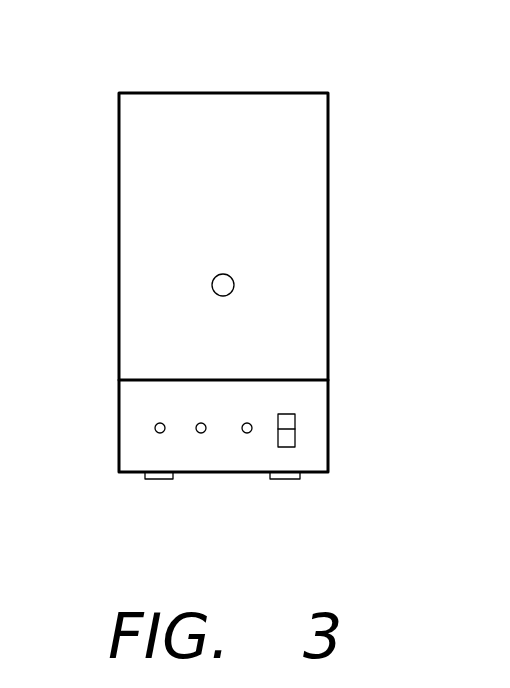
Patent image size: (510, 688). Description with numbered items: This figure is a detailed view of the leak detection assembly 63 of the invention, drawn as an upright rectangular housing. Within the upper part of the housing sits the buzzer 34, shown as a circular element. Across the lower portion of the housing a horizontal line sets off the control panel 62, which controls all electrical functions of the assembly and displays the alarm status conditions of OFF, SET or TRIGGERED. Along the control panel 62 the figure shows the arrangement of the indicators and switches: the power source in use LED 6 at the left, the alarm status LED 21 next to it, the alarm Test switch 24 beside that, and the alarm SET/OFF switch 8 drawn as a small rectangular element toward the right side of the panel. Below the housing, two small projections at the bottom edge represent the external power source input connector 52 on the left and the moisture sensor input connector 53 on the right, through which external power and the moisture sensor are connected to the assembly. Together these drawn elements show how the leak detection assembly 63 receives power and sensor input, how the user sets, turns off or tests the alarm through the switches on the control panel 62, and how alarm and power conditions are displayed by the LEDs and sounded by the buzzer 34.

The leak detection assembly 63 is at (254, 95).
The control panel 62 is at (322, 393).
The buzzer 34 is at (226, 278).
The power source in use LED 6 is at (155, 428).
The alarm status LED 21 is at (201, 423).
The alarm Test switch 24 is at (248, 423).
The alarm SET/OFF switch 8 is at (295, 418).
The external power source input connector 52 is at (152, 480).
The moisture sensor input connector 53 is at (284, 480).